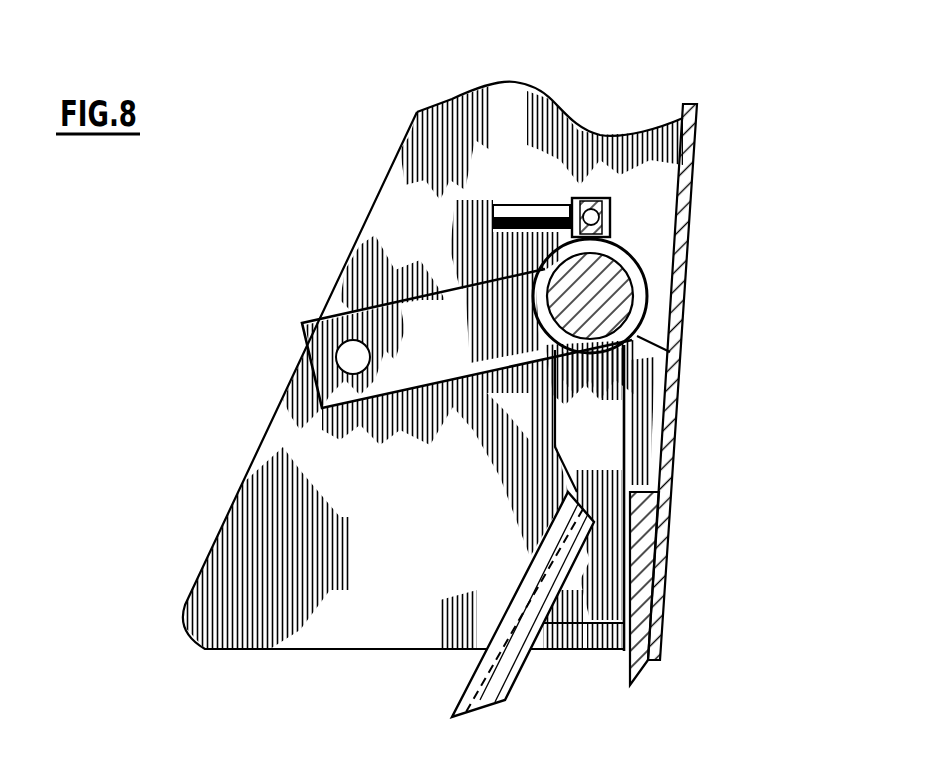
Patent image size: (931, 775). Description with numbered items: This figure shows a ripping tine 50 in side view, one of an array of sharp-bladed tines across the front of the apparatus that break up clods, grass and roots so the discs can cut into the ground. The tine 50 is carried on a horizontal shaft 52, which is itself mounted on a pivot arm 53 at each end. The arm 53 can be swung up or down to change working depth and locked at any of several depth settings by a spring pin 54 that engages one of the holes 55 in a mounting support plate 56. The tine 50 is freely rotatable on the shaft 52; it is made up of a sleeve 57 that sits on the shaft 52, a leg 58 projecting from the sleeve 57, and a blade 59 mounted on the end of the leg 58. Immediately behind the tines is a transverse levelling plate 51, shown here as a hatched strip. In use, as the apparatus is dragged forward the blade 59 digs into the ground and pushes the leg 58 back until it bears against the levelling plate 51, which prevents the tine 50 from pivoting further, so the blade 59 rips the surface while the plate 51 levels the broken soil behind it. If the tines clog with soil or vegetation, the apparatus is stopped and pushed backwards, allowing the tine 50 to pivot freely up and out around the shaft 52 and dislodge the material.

The ripping tine 50 is at (450, 568).
The levelling plate 51 is at (662, 546).
The horizontal shaft 52 is at (670, 352).
The pivot arm 53 is at (458, 300).
The spring pin 54 is at (614, 208).
The hole 55 is at (556, 190).
The mounting support plate 56 is at (458, 494).
The sleeve 57 is at (640, 268).
The leg 58 is at (613, 446).
The blade 59 is at (476, 674).